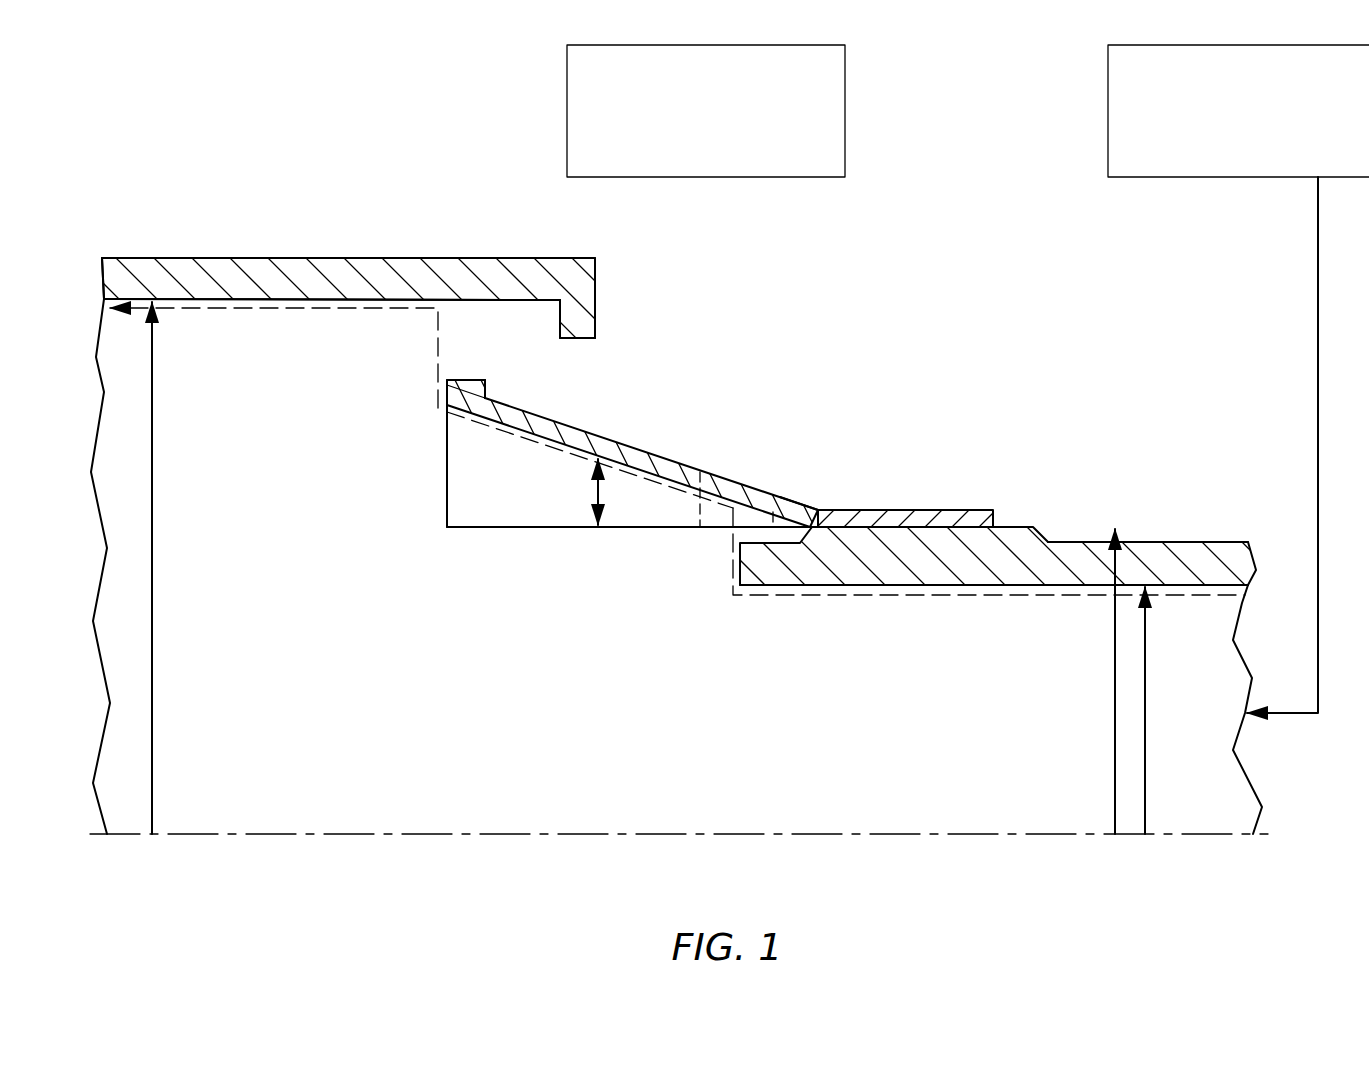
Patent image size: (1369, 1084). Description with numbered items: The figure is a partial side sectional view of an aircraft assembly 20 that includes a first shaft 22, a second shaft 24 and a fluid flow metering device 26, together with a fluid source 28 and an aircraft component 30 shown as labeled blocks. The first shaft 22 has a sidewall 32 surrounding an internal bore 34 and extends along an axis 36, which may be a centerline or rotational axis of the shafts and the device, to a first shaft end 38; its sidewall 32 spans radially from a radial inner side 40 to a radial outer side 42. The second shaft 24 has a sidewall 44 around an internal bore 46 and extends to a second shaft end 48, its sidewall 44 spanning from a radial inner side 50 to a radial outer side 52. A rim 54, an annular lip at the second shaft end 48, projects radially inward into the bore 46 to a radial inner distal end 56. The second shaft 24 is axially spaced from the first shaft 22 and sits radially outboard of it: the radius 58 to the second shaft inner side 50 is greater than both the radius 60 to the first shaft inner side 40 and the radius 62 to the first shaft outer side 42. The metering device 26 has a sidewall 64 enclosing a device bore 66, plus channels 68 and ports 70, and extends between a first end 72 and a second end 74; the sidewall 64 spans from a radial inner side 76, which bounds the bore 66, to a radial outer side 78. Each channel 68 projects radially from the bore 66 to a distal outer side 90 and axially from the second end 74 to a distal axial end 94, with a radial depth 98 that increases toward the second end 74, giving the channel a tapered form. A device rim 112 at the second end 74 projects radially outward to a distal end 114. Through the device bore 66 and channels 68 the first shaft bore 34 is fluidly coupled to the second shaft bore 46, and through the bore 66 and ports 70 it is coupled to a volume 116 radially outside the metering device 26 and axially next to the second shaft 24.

The aircraft assembly 20 is at (124, 110).
The first shaft 22 is at (1239, 528).
The second shaft 24 is at (139, 243).
The fluid flow metering device 26 is at (692, 446).
The fluid source 28 is at (1233, 139).
The aircraft component 30 is at (692, 139).
The first shaft sidewall 32 is at (1240, 563).
The first shaft internal bore 34 is at (1051, 773).
The axis 36 is at (120, 835).
The first shaft end 38 is at (732, 570).
The first shaft sidewall radial inner side 40 is at (1207, 587).
The first shaft sidewall radial outer side 42 is at (1190, 540).
The second shaft sidewall 44 is at (118, 277).
The second shaft internal bore 46 is at (188, 506).
The second shaft end 48 is at (597, 270).
The second shaft sidewall radial inner side 50 is at (203, 302).
The second shaft sidewall radial outer side 52 is at (205, 258).
The second shaft rim 54 is at (577, 315).
The second shaft rim radial inner distal end 56 is at (585, 338).
The second shaft sidewall inner side radius 58 is at (152, 805).
The first shaft sidewall inner side radius 60 is at (1147, 812).
The first shaft sidewall outer side radius 62 is at (1108, 812).
The device sidewall 64 is at (787, 505).
The device internal bore 66 is at (546, 651).
The channel 68 is at (488, 488).
The port 70 is at (700, 502).
The device first end 72 is at (993, 512).
The device second end 74 is at (446, 397).
The device sidewall radial inner side 76 is at (478, 532).
The device sidewall radial outer side 78 is at (565, 423).
The channel distal radial outer side 90 is at (542, 437).
The channel distal axial end 94 is at (810, 530).
The channel radial depth 98 is at (598, 508).
The device rim 112 is at (462, 388).
The device rim radial outer distal end 114 is at (470, 382).
The volume 116 is at (672, 338).